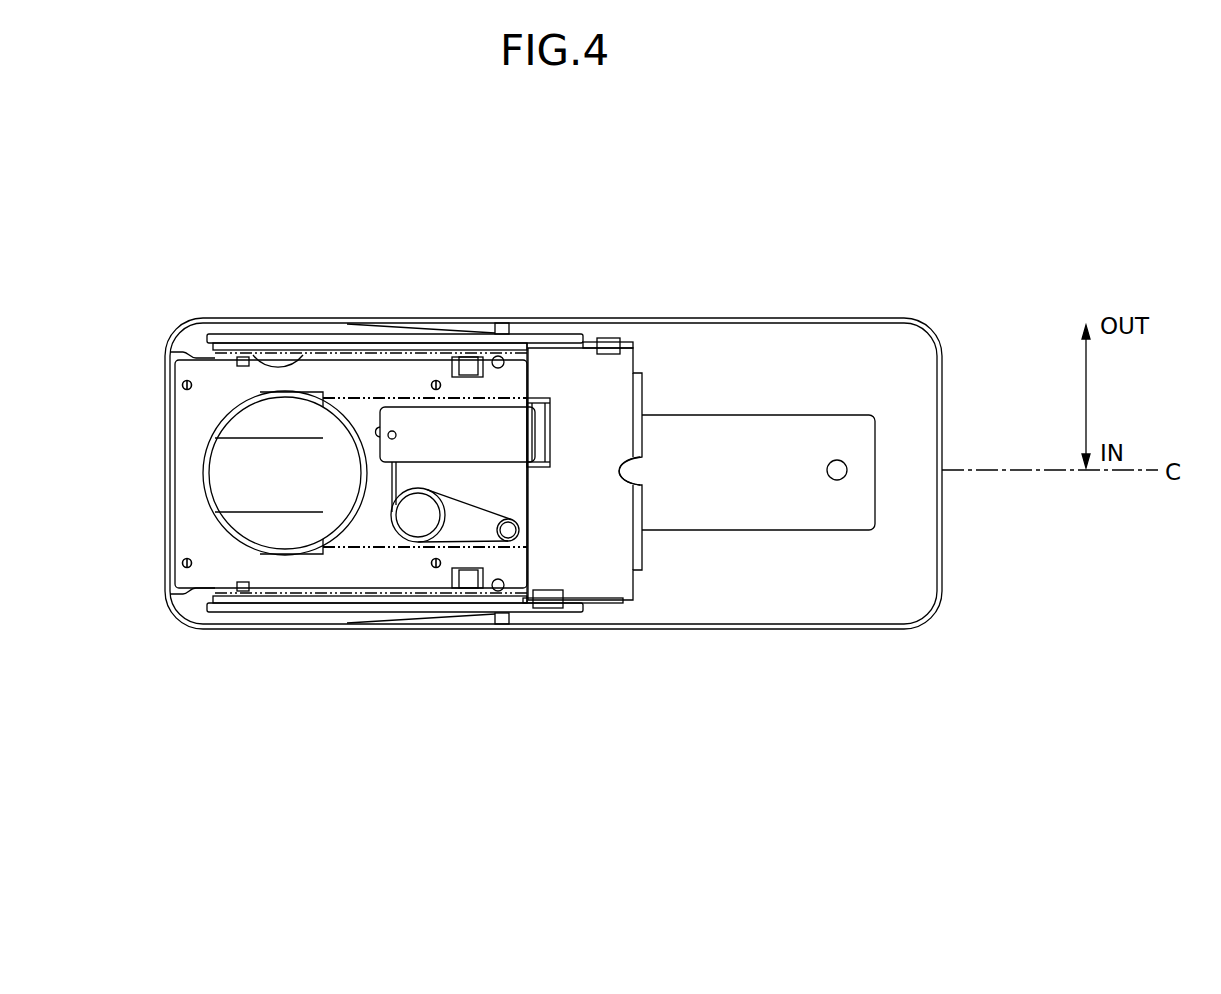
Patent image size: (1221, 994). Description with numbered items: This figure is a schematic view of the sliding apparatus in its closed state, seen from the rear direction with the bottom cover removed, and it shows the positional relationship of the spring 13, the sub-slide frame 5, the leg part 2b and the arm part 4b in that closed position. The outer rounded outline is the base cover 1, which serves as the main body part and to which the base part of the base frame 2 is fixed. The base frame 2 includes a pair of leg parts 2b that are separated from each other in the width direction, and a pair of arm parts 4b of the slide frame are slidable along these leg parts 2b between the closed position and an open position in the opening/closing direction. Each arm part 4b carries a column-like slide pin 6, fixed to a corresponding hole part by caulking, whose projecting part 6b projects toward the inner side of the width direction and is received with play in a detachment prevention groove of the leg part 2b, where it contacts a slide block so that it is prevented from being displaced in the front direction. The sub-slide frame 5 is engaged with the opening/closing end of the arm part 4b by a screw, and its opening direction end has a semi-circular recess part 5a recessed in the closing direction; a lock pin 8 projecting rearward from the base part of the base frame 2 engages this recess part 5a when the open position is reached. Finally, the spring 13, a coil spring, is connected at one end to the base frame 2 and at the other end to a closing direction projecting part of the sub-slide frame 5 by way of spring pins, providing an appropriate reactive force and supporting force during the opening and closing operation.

The base cover 1 is at (952, 566).
The base frame 2 is at (720, 400).
The leg part 2b is at (279, 603).
The arm part 4b is at (237, 612).
The sub-slide frame 5 is at (598, 382).
The recess part 5a is at (617, 473).
The slide pin 6 is at (295, 299).
The projecting part 6b is at (302, 355).
The lock pin 8 is at (837, 460).
The spring 13 is at (393, 543).